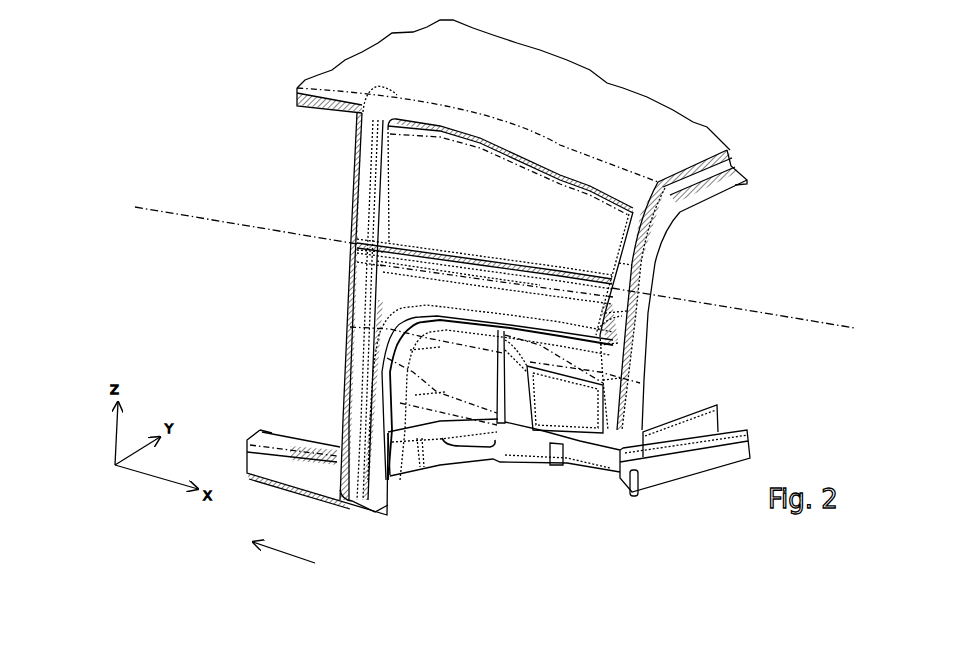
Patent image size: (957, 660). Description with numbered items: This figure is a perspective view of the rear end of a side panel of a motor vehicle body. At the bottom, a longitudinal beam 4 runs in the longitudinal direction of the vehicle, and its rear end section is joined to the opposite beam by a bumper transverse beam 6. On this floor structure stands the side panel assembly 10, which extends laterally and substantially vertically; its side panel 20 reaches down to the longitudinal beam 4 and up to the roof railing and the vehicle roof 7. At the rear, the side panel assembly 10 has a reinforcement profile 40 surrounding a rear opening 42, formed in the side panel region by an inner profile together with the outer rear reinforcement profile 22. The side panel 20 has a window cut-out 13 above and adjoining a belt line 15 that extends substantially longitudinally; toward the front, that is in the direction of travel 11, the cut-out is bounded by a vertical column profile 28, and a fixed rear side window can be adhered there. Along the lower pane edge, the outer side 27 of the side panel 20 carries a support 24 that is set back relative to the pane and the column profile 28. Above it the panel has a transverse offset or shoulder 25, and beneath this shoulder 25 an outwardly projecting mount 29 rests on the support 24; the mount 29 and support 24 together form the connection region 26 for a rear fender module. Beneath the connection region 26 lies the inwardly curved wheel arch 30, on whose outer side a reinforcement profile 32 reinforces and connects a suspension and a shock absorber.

The longitudinal beam 4 is at (582, 466).
The bumper transverse beam 6 is at (740, 445).
The vehicle roof 7 is at (620, 115).
The side panel assembly 10 is at (440, 122).
The direction of travel 11 is at (275, 553).
The window cut-out 13 is at (519, 219).
The belt line 15 is at (814, 318).
The side panel 20 is at (358, 363).
The outer rear reinforcement profile 22 is at (628, 328).
The support 24 is at (562, 293).
The shoulder 25 is at (413, 246).
The connection region 26 is at (371, 309).
The outer side 27 is at (324, 212).
The column profile 28 is at (368, 165).
The mount 29 is at (487, 265).
The wheel arch 30 is at (434, 420).
The reinforcement profile 32 is at (509, 418).
The reinforcement profile 40 is at (765, 136).
The rear opening 42 is at (712, 226).